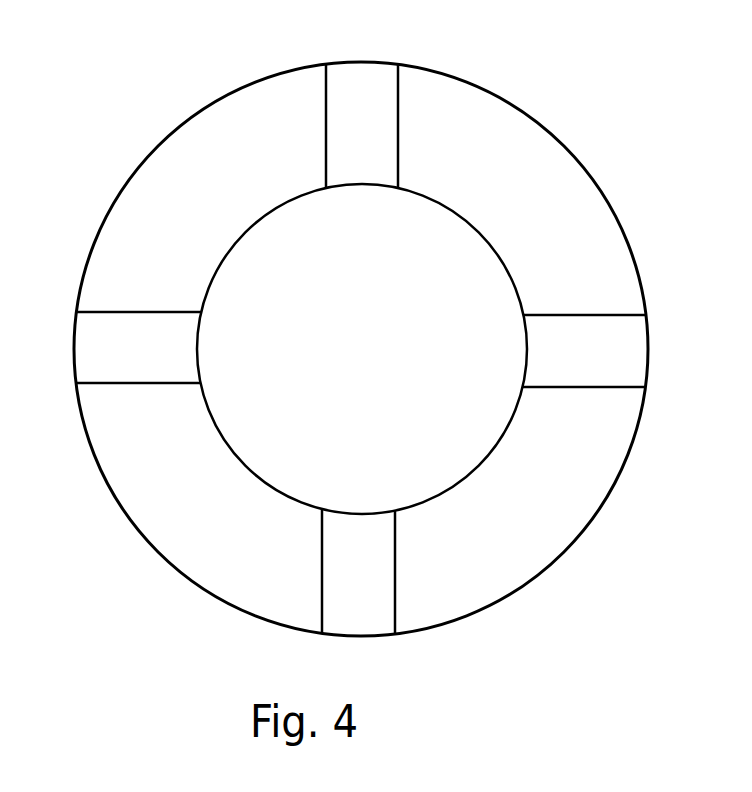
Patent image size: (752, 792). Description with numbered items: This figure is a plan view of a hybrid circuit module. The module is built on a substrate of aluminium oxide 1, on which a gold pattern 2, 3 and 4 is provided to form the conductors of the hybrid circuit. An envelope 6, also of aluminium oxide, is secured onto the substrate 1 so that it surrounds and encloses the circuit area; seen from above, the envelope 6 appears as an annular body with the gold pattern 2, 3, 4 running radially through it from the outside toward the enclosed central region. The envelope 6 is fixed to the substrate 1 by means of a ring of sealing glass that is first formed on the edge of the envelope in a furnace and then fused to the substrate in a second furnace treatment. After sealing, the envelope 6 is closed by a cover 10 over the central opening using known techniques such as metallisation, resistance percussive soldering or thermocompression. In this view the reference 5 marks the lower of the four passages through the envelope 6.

The substrate of aluminium oxide 1 is at (197, 555).
The gold pattern 2 is at (108, 365).
The gold pattern 3 is at (617, 367).
The gold pattern 4 is at (368, 80).
The lower radial channel 5 is at (378, 606).
The envelope 6 is at (490, 237).
The cover 10 is at (276, 275).